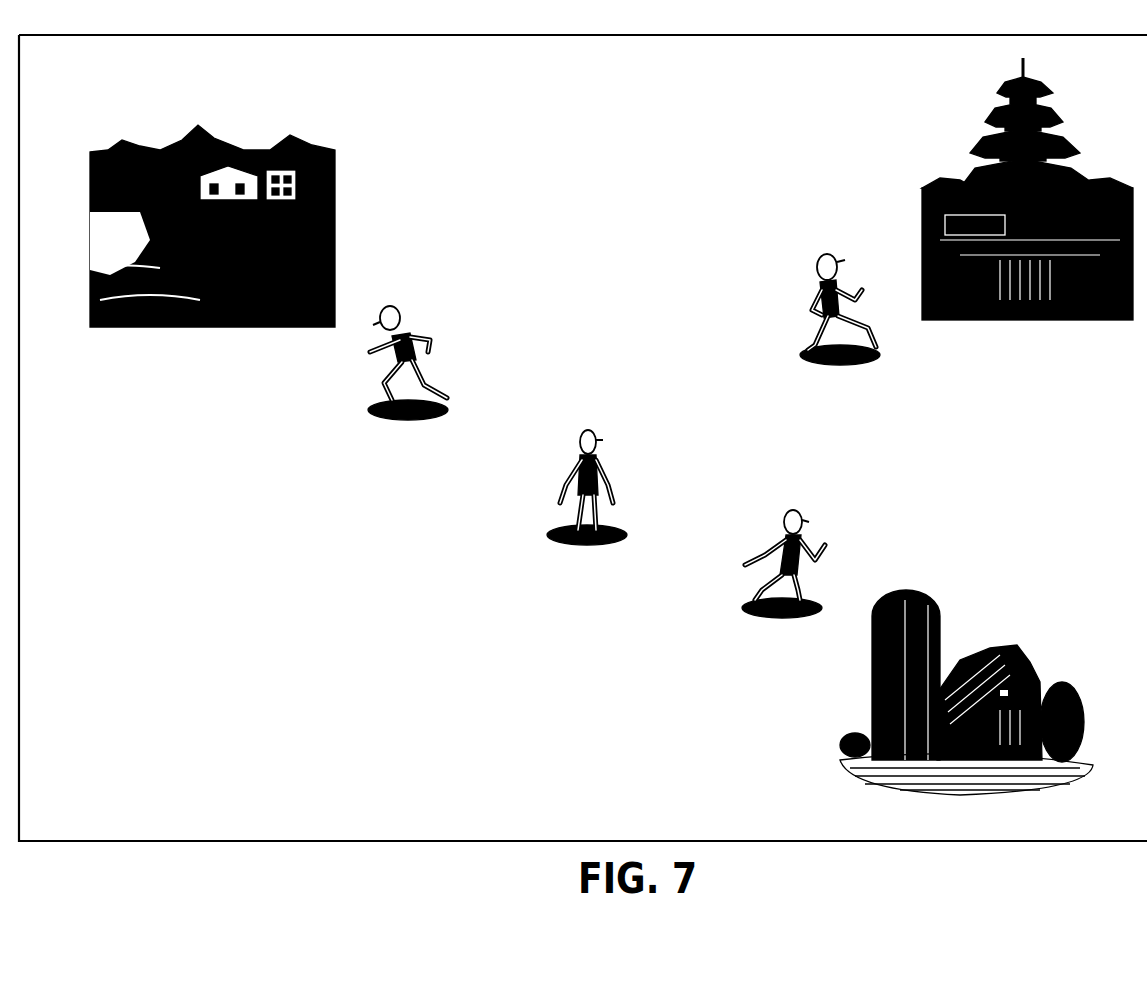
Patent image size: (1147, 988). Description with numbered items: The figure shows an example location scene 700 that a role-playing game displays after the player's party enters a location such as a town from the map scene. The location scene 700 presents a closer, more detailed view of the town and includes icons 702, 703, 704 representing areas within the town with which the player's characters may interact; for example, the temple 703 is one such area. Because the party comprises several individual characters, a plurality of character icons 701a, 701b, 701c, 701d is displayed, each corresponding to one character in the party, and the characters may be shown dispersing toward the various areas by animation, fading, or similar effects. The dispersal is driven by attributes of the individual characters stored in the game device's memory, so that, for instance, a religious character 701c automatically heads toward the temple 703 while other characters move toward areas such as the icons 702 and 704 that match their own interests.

The location scene 700 is at (532, 762).
The character icon 701a is at (545, 538).
The character icon 701b is at (407, 420).
The religious character 701c is at (800, 358).
The character icon 701d is at (745, 615).
The area icon 702 is at (336, 187).
The temple 703 is at (922, 190).
The area icon 704 is at (838, 756).